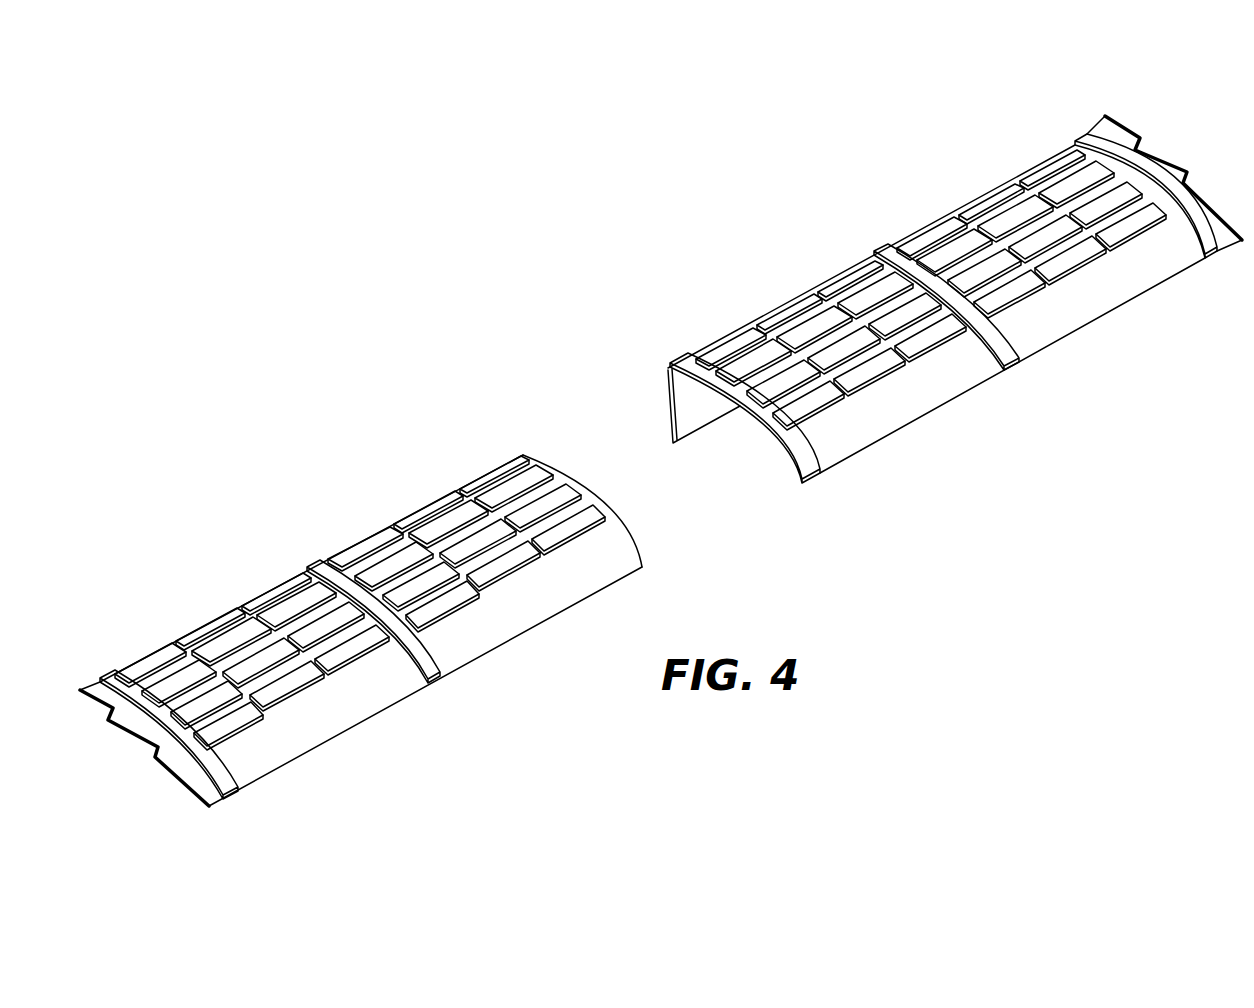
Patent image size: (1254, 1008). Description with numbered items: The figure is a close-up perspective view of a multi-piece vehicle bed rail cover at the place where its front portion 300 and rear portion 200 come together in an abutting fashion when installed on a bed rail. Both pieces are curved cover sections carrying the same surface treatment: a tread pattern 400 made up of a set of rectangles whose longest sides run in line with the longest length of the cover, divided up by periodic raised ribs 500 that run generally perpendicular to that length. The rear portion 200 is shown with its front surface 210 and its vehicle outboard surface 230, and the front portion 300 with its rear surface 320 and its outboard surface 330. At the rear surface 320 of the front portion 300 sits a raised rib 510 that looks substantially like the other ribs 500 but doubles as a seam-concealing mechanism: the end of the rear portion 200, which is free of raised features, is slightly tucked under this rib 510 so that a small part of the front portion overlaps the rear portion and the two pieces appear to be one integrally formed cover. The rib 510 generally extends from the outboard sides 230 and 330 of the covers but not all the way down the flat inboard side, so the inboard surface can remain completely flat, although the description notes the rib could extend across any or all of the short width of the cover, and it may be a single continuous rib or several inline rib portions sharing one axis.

The rear portion 200 is at (150, 785).
The front surface 210 is at (627, 525).
The outboard surface 230 is at (363, 680).
The front portion 300 is at (1168, 127).
The rear surface 320 is at (702, 413).
The outboard surface 330 is at (1135, 270).
The tread pattern 400 is at (215, 623).
The ribs 500 is at (310, 568).
The rib 510 is at (802, 457).